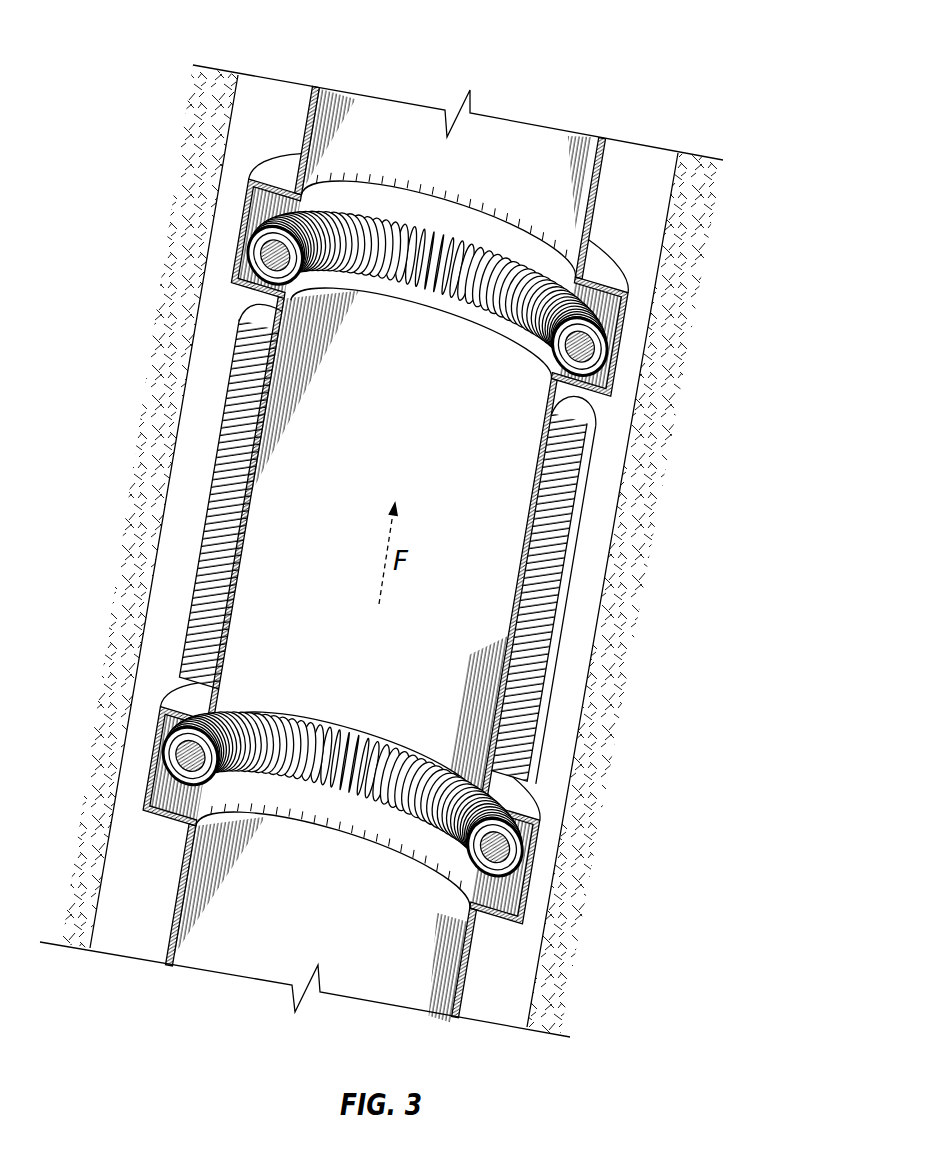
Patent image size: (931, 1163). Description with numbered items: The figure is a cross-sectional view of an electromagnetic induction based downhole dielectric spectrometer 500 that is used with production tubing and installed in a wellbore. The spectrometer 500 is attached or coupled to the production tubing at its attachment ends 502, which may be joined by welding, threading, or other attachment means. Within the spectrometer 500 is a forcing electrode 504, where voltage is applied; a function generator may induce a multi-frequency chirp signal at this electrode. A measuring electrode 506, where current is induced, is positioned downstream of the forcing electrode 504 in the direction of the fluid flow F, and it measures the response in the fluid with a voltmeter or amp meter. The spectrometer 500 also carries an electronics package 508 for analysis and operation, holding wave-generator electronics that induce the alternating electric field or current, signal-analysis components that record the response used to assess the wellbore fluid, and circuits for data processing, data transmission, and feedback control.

The dielectric spectrometer 500 is at (721, 55).
The attachment ends 502 is at (386, 552).
The forcing electrode 504 is at (500, 850).
The measuring electrode 506 is at (605, 358).
The electronics package 508 is at (556, 532).